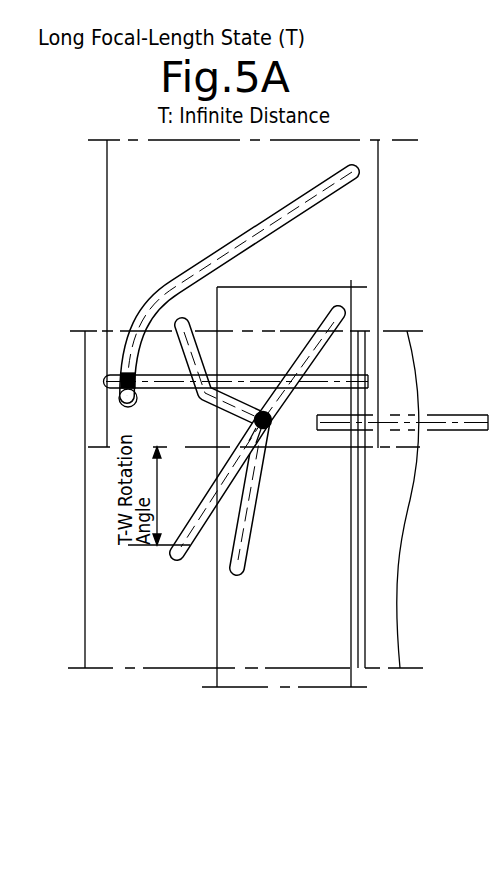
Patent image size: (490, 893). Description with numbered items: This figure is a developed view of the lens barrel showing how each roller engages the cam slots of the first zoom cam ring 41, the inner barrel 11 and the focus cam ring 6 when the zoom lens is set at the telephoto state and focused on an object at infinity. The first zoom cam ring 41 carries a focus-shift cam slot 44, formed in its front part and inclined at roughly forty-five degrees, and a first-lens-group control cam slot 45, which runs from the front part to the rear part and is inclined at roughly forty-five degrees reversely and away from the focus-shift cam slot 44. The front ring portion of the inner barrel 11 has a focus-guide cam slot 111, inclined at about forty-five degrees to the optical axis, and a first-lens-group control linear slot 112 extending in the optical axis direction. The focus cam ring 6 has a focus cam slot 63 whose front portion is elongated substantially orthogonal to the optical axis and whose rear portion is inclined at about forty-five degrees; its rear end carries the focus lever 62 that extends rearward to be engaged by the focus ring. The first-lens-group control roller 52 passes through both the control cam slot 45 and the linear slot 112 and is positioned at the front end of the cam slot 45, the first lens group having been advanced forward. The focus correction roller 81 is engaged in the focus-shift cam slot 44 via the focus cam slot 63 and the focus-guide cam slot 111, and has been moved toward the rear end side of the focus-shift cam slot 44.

The focus cam ring 6 is at (310, 449).
The inner barrel 11 is at (95, 330).
The first zoom cam ring 41 is at (340, 143).
The focus-shift cam slot 44 is at (178, 320).
The first-lens-group control cam slot 45 is at (268, 225).
The first-lens-group control roller 52 is at (117, 393).
The focus lever 62 is at (450, 423).
The focus cam slot 63 is at (250, 562).
The focus correction roller 81 is at (342, 508).
The focus-guide cam slot 111 is at (180, 557).
The first-lens-group control linear slot 112 is at (236, 365).